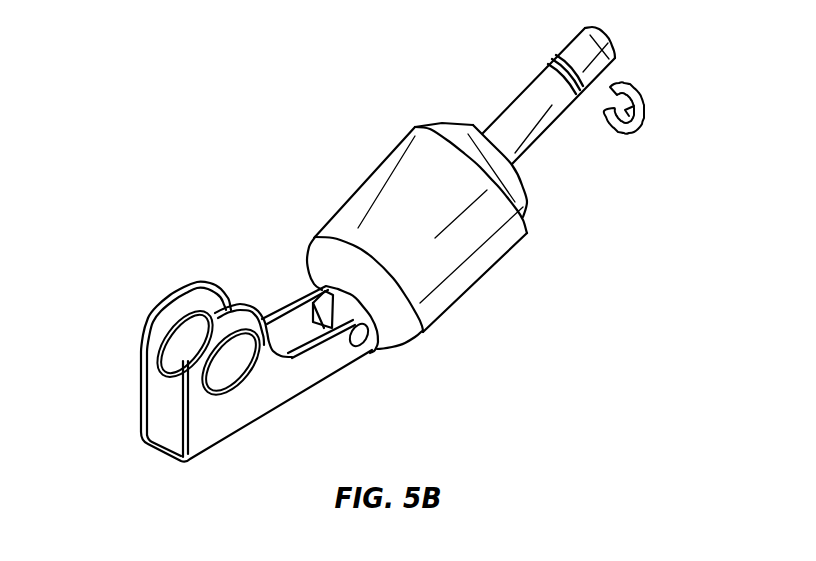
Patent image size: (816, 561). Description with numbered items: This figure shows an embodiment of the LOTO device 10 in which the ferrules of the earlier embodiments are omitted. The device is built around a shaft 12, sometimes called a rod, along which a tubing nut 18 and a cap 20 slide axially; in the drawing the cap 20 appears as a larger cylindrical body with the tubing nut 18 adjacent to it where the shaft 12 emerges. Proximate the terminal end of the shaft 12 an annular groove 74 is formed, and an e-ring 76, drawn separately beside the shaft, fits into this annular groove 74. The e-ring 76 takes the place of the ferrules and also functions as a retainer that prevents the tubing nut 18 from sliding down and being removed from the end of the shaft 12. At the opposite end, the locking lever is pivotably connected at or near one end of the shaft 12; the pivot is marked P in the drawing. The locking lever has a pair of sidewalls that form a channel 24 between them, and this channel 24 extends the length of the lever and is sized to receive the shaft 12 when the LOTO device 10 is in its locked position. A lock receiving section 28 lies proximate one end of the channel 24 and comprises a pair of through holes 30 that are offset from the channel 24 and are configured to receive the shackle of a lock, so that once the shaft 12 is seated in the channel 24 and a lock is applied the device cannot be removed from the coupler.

The LOTO device 10 is at (288, 77).
The shaft 12 is at (527, 115).
The tubing nut 18 is at (532, 188).
The cap 20 is at (382, 192).
The channel 24 is at (292, 324).
The lock receiving section 28 is at (132, 277).
The through holes 30 is at (242, 368).
The annular groove 74 is at (555, 65).
The e-ring 76 is at (635, 98).
The pivot pin P is at (364, 338).